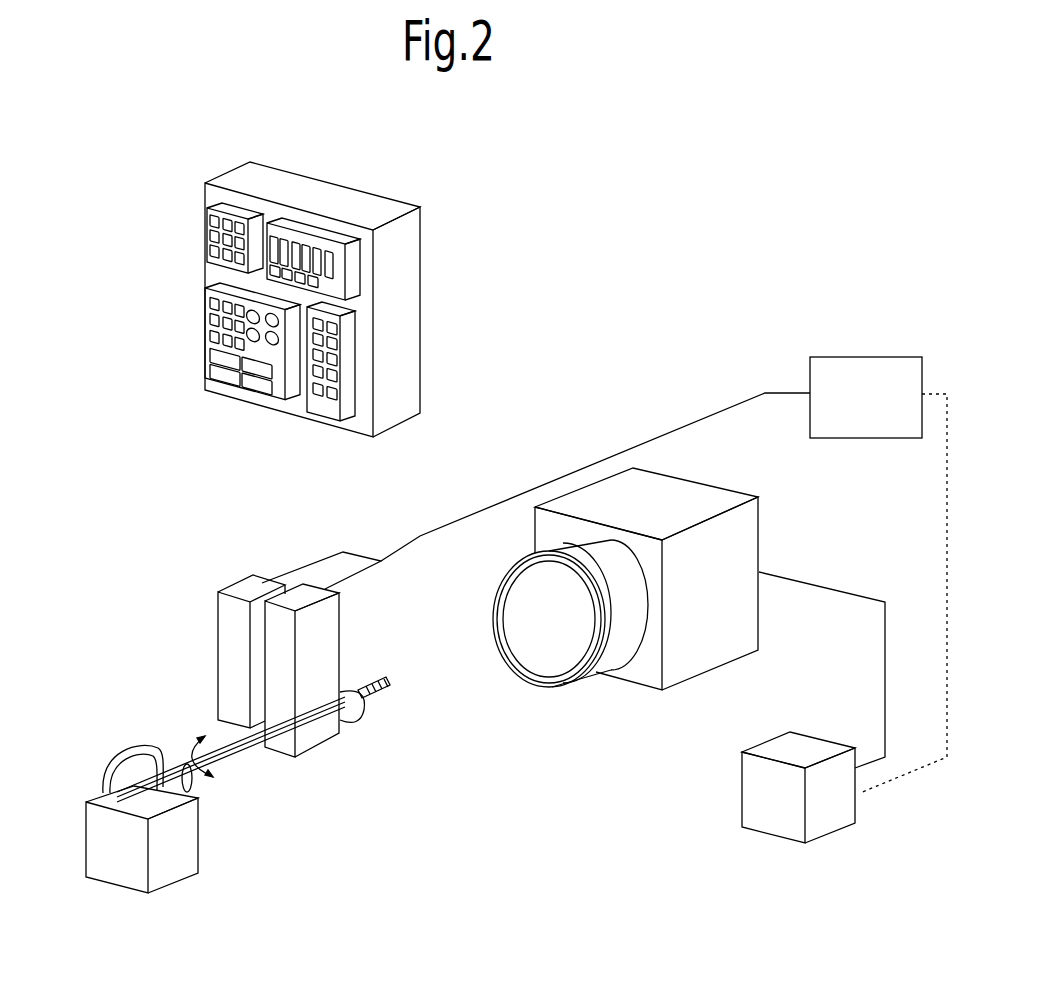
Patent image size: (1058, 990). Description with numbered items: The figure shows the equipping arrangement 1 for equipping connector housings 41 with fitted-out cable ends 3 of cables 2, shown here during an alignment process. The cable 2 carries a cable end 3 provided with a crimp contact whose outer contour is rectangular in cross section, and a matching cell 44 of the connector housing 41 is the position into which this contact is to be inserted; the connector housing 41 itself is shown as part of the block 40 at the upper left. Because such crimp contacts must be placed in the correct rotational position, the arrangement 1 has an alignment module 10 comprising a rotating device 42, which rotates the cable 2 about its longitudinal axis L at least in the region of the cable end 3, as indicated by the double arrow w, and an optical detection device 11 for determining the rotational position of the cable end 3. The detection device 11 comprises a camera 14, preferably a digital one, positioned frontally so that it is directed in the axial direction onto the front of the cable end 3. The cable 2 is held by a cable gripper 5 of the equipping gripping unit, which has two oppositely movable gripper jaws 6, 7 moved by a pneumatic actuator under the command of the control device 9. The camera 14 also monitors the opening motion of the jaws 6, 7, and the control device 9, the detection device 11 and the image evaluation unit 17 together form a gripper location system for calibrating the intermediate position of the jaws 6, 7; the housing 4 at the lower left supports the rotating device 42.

The equipping arrangement 1 is at (676, 275).
The cable 2 is at (232, 742).
The cable end 3 is at (383, 692).
The drive box 4 is at (73, 812).
The cable gripper 5 is at (272, 635).
The gripper jaw 6 is at (232, 677).
The gripper jaw 7 is at (327, 653).
The control device 9 is at (857, 380).
The alignment module 10 is at (625, 550).
The optical detection device 11 is at (613, 678).
The camera 14 is at (705, 657).
The image evaluation unit 17 is at (772, 823).
The operating panel 40 is at (362, 293).
The connector housing 41 is at (402, 390).
The rotating device 42 is at (122, 750).
The cell 44 is at (318, 390).